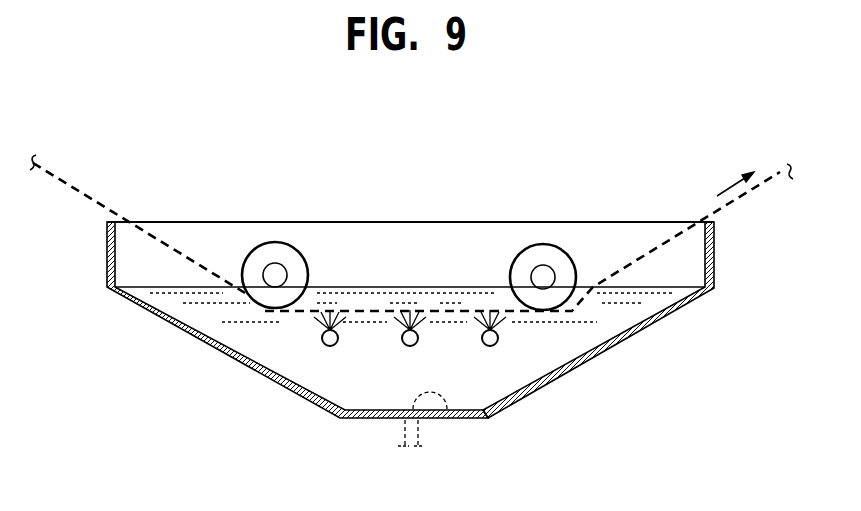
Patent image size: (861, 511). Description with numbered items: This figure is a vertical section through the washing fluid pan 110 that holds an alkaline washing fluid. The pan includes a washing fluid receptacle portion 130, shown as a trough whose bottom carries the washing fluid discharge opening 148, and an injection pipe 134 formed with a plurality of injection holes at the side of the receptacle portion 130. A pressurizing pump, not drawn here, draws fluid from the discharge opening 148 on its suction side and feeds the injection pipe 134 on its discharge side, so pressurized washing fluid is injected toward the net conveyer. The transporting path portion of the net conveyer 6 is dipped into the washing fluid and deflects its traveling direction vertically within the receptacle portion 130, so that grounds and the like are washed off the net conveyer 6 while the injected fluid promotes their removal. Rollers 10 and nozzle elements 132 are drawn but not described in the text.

The net conveyer 6 is at (100, 204).
The guide roller 10 is at (532, 258).
The washing fluid pan 110 is at (154, 312).
The washing fluid receptacle portion 130 is at (518, 367).
The nozzle 132 is at (324, 332).
The injection pipe 134 is at (325, 346).
The washing fluid discharge opening 148 is at (452, 421).